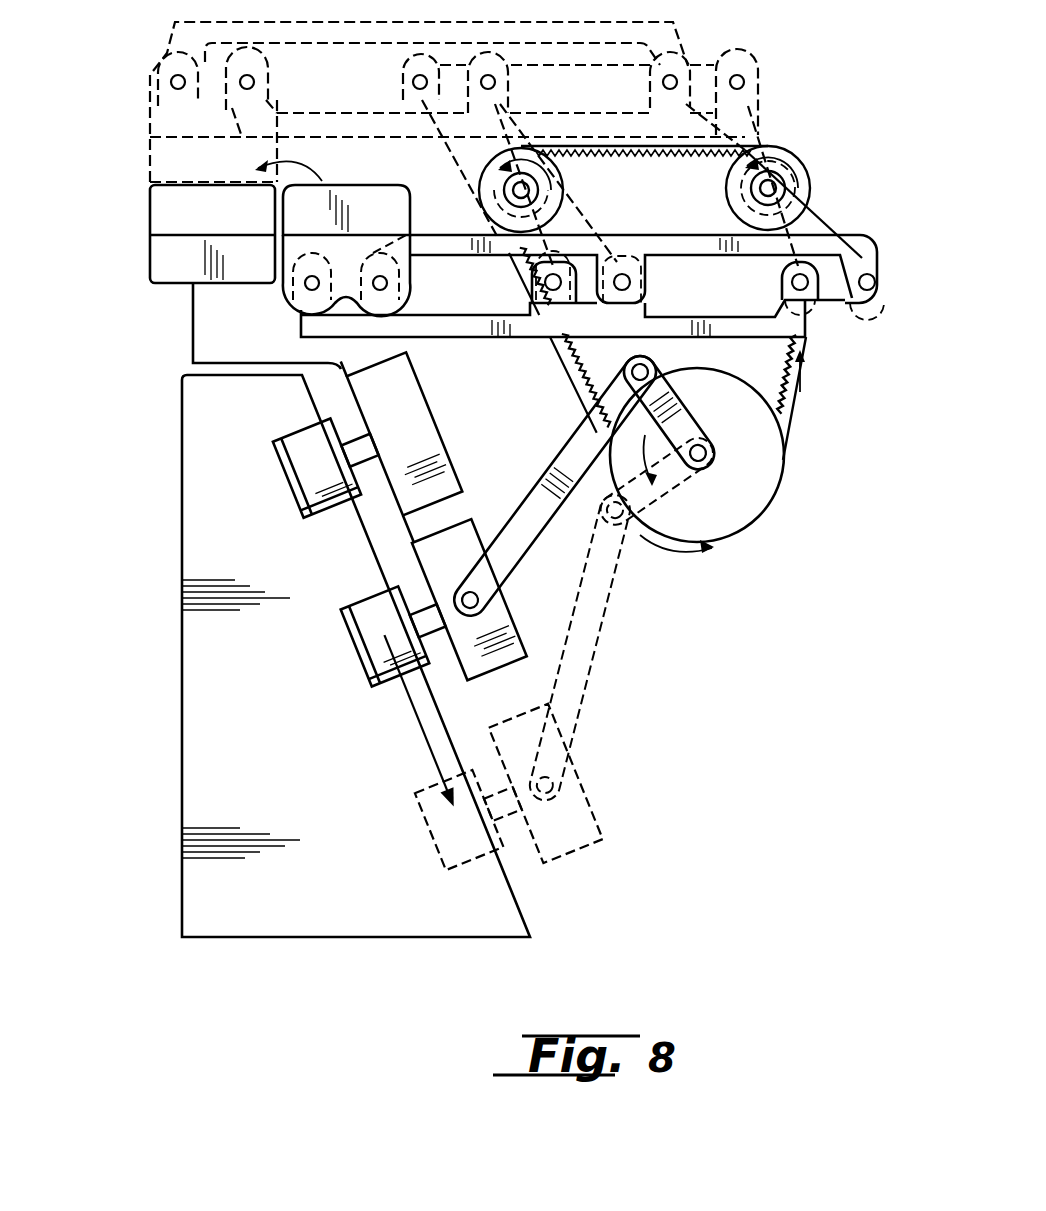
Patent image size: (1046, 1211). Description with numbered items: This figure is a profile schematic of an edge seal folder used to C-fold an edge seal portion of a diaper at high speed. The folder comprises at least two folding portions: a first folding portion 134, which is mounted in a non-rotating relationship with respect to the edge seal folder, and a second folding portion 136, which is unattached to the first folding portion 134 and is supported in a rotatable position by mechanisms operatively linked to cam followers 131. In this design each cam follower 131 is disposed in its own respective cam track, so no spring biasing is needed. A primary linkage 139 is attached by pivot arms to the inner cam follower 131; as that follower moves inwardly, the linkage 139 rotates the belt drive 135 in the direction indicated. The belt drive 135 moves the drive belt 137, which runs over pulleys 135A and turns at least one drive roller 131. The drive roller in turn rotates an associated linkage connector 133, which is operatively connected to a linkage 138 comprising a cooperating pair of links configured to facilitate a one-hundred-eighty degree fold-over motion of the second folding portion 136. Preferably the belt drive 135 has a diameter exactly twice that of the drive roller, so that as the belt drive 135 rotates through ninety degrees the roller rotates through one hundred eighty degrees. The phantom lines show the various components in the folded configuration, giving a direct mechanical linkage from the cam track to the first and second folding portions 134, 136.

The cam follower 131 is at (297, 470).
The linkage connector 133 is at (830, 210).
The first folding portion 134 is at (163, 211).
The belt drive 135 is at (733, 518).
The belt pulley 135A is at (566, 190).
The second folding portion 136 is at (376, 200).
The drive belt 137 is at (785, 413).
The linkage 138 is at (441, 246).
The primary linkage 139 is at (570, 456).